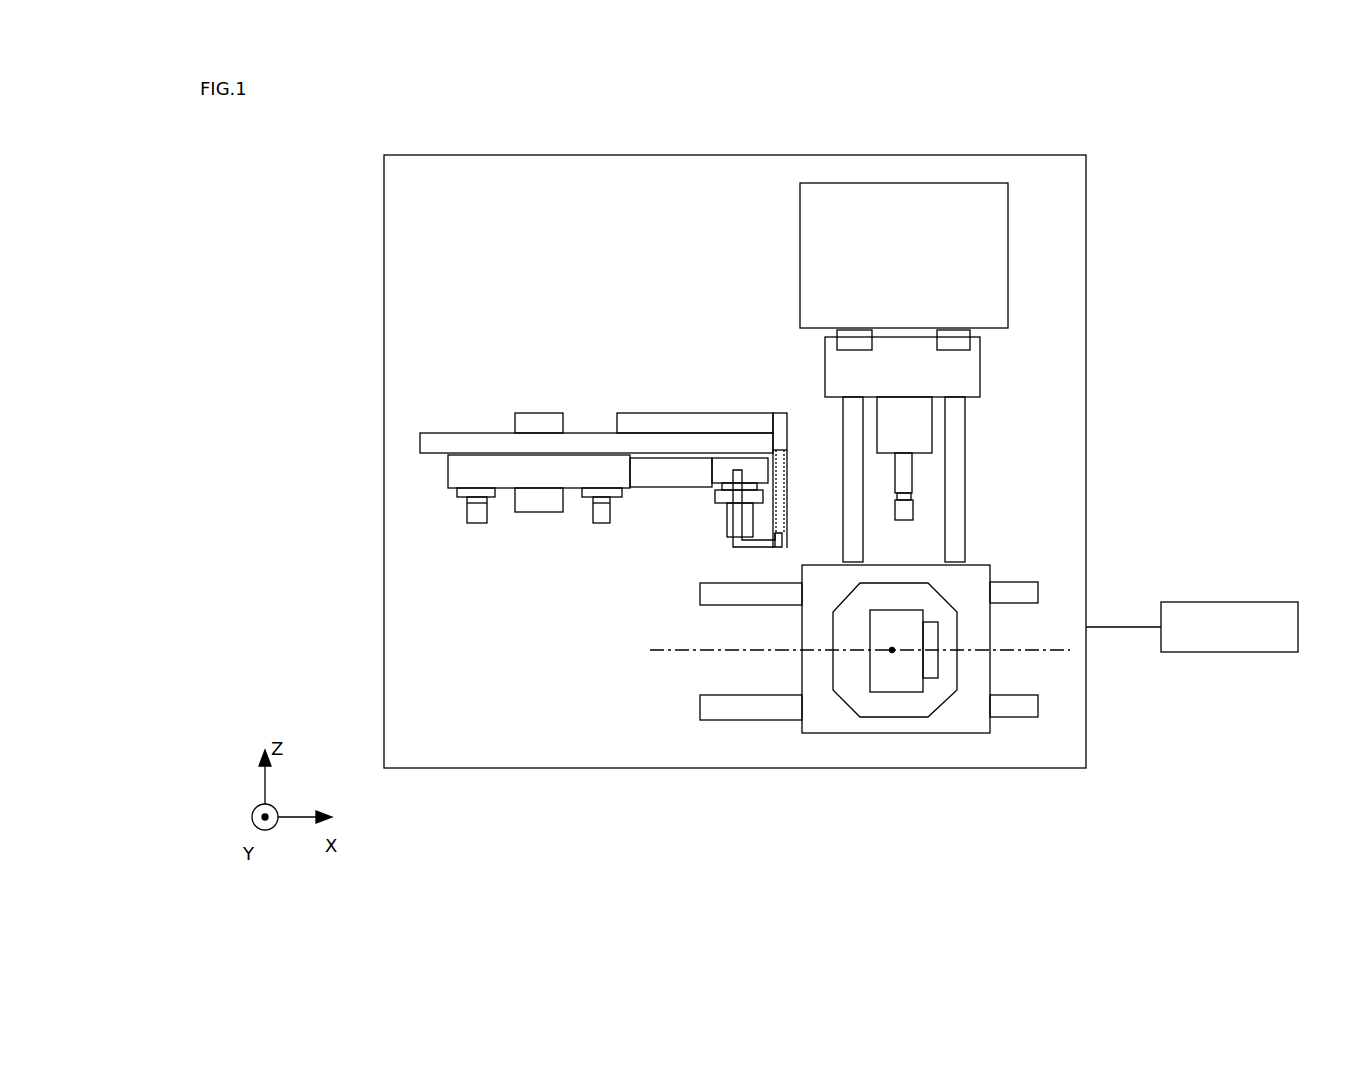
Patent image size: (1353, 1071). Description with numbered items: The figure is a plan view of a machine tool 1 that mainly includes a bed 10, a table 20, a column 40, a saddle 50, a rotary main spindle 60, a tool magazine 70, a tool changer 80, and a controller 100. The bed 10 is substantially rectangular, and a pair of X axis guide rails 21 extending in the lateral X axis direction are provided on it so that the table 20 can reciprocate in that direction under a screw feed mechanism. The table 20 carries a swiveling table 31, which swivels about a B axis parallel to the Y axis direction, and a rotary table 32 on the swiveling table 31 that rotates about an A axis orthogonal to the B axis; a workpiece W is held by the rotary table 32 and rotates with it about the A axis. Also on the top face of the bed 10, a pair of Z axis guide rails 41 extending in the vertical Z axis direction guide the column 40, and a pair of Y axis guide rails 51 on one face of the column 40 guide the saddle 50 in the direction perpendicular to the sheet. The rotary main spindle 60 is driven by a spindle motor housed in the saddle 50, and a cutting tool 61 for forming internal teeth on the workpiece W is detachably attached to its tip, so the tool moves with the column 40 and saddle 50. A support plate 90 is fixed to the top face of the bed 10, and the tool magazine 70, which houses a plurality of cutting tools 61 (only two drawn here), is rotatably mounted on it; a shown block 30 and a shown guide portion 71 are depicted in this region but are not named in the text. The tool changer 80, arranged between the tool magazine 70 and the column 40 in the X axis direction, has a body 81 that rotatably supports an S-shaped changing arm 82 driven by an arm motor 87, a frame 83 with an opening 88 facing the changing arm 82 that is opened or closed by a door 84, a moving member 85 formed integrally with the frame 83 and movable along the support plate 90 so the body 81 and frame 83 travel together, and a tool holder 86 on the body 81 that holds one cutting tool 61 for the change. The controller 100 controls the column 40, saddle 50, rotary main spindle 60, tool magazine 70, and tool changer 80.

The machine tool 1 is at (1135, 186).
The bed 10 is at (399, 200).
The table 20 is at (970, 730).
The X axis guide rails 21 is at (1057, 725).
The table 30 is at (960, 580).
The swiveling table 31 is at (847, 690).
The rotary table 32 is at (885, 675).
The column 40 is at (998, 273).
The Z axis guide rails 41 is at (972, 482).
The saddle 50 is at (968, 363).
The Y axis guide rails 51 is at (855, 335).
The rotary main spindle 60 is at (920, 428).
The cutting tool 61 is at (593, 515).
The tool magazine 70 is at (459, 472).
The slide block 71 is at (455, 491).
The tool changer 80 is at (665, 578).
The body 81 is at (750, 463).
The changing arm 82 is at (723, 482).
The frame 83 is at (782, 413).
The door 84 is at (773, 528).
The moving member 85 is at (678, 418).
The tool holder 86 is at (653, 478).
The arm motor 87 is at (727, 520).
The opening 88 is at (787, 532).
The support plate 90 is at (455, 439).
The controller 100 is at (1270, 600).
The A axis A is at (1060, 652).
The B axis B is at (890, 650).
The workpiece W is at (912, 665).